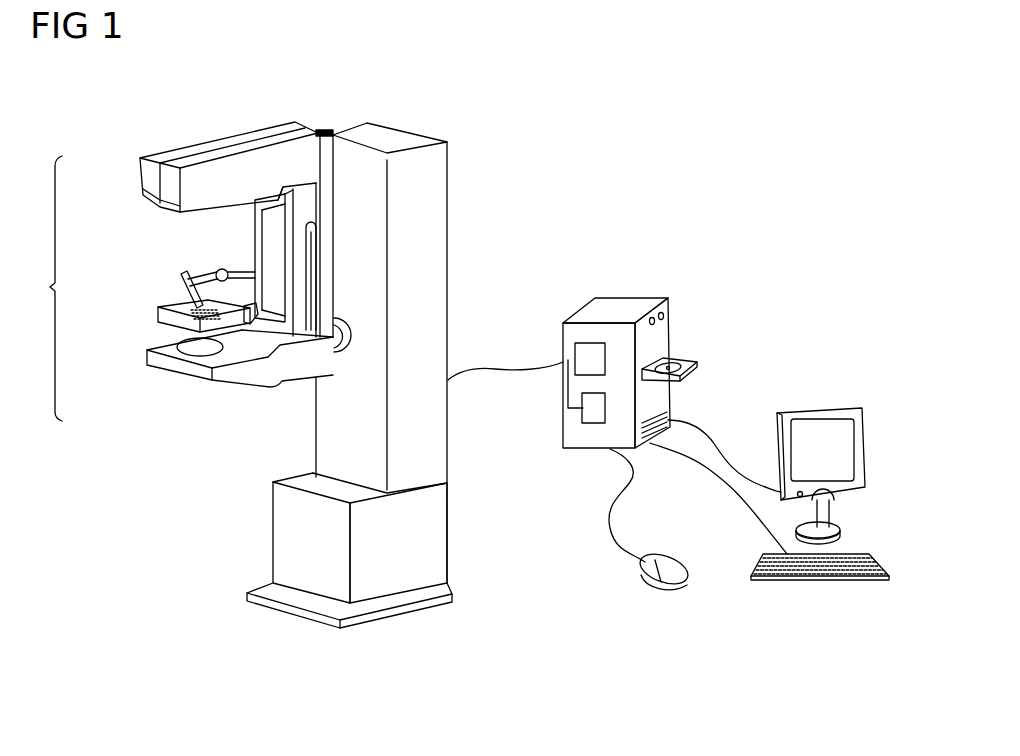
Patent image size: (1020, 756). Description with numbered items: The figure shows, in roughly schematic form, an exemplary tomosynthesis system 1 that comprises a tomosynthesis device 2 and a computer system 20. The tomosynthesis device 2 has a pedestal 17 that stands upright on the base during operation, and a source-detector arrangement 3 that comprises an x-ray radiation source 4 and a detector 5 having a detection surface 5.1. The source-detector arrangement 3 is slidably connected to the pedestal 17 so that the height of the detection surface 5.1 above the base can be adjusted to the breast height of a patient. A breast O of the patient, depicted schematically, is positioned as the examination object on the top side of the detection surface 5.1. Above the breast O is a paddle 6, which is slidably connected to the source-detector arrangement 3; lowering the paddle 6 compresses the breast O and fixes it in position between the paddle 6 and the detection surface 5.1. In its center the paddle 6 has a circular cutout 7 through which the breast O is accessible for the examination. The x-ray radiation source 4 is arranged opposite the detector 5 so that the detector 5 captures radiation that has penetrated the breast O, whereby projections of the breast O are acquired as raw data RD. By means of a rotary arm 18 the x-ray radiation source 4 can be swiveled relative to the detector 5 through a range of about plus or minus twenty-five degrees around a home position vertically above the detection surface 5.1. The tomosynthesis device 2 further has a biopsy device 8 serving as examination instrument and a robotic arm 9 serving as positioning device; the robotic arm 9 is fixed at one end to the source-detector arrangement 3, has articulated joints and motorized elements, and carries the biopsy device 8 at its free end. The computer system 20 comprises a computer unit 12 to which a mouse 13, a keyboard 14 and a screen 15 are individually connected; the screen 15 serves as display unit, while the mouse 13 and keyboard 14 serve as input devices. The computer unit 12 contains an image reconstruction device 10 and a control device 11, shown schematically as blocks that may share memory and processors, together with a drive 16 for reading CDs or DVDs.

The tomosynthesis system 1 is at (662, 108).
The tomosynthesis device 2 is at (422, 96).
The source-detector arrangement 3 is at (43, 288).
The x-ray radiation source 4 is at (140, 214).
The detector 5 is at (163, 360).
The detection surface 5.1 is at (243, 356).
The paddle 6 is at (177, 306).
The circular cutout 7 is at (185, 300).
The biopsy device 8 is at (189, 273).
The robotic arm 9 is at (236, 271).
The breast O is at (190, 349).
The image reconstruction device 10 is at (576, 352).
The control device 11 is at (583, 415).
The computer unit 12 is at (618, 300).
The mouse 13 is at (679, 567).
The keyboard 14 is at (869, 556).
The screen 15 is at (860, 445).
The drive 16 is at (676, 361).
The pedestal 17 is at (441, 193).
The rotary arm 18 is at (320, 131).
The computer system 20 is at (748, 232).
The raw data RD is at (490, 375).